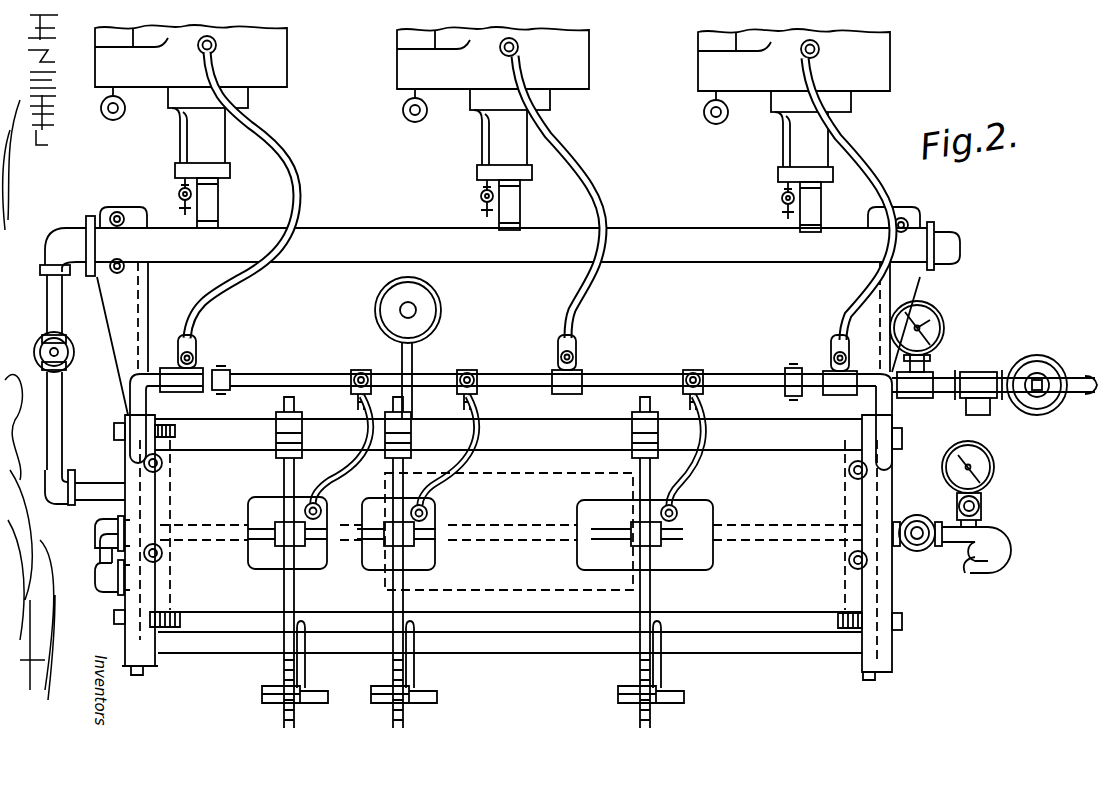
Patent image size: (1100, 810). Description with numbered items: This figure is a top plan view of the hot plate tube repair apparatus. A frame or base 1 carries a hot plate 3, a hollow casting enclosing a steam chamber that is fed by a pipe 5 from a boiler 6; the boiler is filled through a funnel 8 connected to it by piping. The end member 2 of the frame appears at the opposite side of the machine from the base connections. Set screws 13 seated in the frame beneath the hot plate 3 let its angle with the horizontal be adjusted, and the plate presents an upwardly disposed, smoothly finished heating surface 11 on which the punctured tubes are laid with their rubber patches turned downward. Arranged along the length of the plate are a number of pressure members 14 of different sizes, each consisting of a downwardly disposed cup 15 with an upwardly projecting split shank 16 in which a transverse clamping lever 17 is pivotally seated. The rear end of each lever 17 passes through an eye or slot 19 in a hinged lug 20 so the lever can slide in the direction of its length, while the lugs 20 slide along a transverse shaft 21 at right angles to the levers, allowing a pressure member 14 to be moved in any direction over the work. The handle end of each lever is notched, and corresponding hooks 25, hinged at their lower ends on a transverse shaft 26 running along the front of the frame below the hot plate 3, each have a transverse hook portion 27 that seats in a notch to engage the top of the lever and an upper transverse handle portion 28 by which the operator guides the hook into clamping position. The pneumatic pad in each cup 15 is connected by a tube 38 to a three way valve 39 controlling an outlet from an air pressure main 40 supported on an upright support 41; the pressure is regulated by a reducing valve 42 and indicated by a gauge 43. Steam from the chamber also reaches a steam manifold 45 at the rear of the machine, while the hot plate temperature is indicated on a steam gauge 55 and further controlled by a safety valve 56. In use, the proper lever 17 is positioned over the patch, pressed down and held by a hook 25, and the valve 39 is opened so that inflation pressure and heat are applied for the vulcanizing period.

The frame or base 1 is at (160, 445).
The right end plate 2 is at (882, 592).
The hot plate 3 is at (495, 608).
The pipe 5 is at (116, 520).
The boiler 6 is at (462, 592).
The funnel 8 is at (423, 308).
The heating surface 11 is at (528, 540).
The set screws 13 is at (165, 472).
The pressure members 14 is at (476, 526).
The cup 15 is at (250, 502).
The split shank 16 is at (275, 548).
The clamping lever 17 is at (282, 594).
The eye or slot 19 is at (302, 437).
The hinged lug 20 is at (508, 423).
The transverse shaft 21 is at (522, 432).
The hooks 25 is at (412, 644).
The transverse shaft 26 is at (540, 648).
The transverse hook portion 27 is at (498, 694).
The handle portion 28 is at (430, 706).
The tube 38 is at (345, 455).
The three way valve 39 is at (360, 372).
The air pressure main 40 is at (236, 378).
The upright support 41 is at (140, 312).
The reducing valve 42 is at (1040, 372).
The gauge 43 is at (937, 330).
The steam manifold 45 is at (322, 230).
The steam gauge 55 is at (995, 471).
The safety valve 56 is at (915, 525).